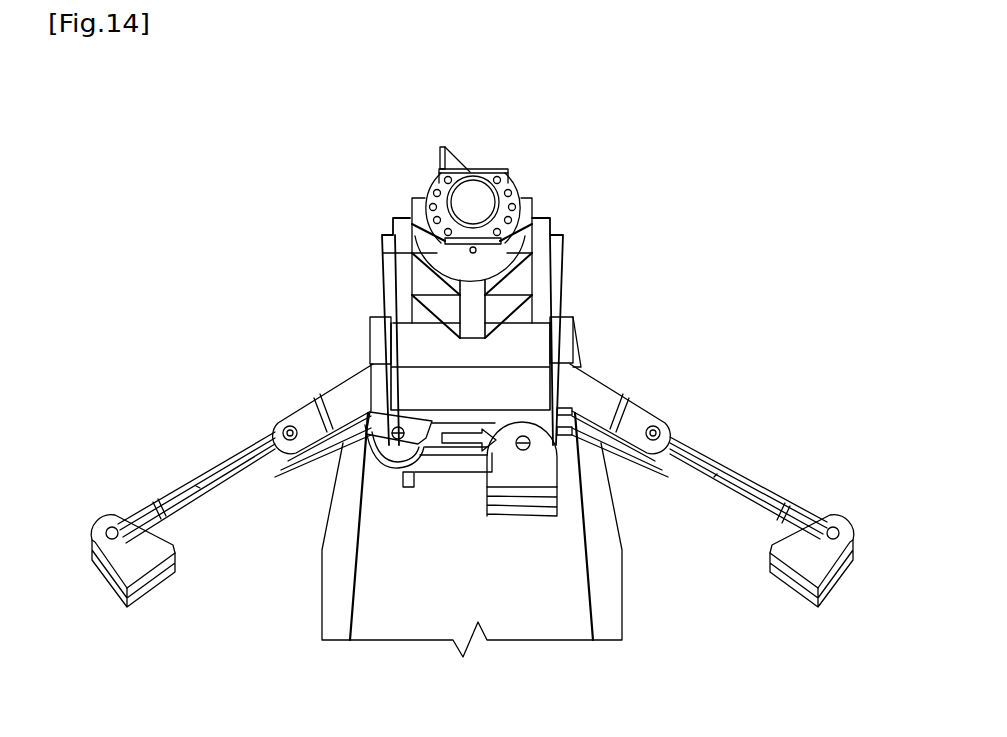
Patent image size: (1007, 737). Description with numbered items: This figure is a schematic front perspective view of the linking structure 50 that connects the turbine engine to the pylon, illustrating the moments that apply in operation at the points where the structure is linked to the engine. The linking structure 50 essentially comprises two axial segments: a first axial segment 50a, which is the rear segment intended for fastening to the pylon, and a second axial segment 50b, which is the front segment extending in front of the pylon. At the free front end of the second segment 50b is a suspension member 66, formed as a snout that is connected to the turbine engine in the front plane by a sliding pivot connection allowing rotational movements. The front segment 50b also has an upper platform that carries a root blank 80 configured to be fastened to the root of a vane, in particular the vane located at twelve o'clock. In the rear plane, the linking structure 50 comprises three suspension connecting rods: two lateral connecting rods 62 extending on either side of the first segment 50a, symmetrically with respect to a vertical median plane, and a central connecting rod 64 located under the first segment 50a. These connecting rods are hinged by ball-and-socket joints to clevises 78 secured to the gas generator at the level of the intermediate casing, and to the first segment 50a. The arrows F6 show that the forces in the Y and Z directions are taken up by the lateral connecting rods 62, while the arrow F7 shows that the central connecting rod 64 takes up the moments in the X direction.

The linking structure 50 is at (578, 236).
The first axial segment 50a is at (537, 398).
The second axial segment 50b is at (391, 247).
The lateral connecting rods 62 is at (211, 498).
The central connecting rod 64 is at (438, 448).
The suspension member 66 is at (524, 176).
The clevises 78 is at (150, 557).
The root blank 80 is at (455, 161).
The arrows F6 is at (196, 486).
The arrow F7 is at (425, 462).